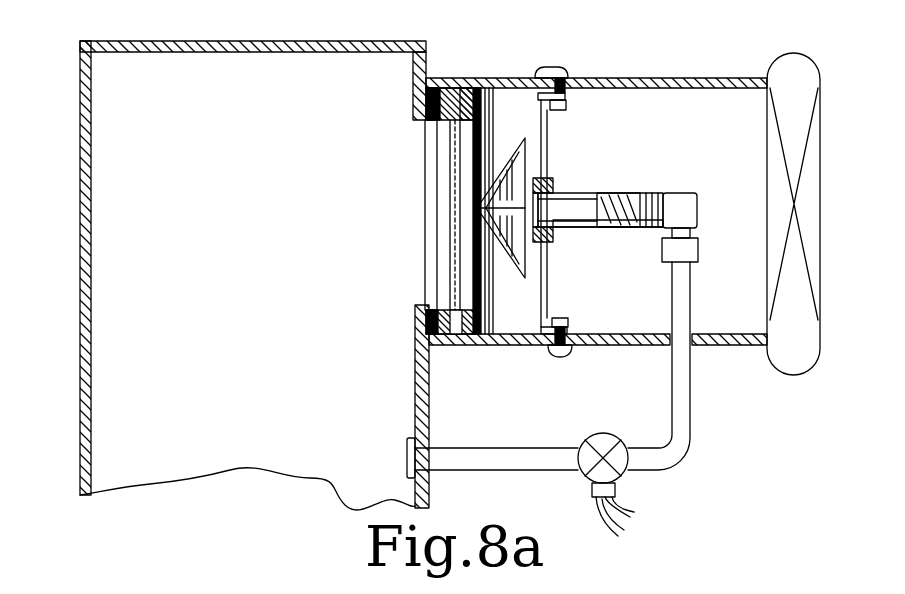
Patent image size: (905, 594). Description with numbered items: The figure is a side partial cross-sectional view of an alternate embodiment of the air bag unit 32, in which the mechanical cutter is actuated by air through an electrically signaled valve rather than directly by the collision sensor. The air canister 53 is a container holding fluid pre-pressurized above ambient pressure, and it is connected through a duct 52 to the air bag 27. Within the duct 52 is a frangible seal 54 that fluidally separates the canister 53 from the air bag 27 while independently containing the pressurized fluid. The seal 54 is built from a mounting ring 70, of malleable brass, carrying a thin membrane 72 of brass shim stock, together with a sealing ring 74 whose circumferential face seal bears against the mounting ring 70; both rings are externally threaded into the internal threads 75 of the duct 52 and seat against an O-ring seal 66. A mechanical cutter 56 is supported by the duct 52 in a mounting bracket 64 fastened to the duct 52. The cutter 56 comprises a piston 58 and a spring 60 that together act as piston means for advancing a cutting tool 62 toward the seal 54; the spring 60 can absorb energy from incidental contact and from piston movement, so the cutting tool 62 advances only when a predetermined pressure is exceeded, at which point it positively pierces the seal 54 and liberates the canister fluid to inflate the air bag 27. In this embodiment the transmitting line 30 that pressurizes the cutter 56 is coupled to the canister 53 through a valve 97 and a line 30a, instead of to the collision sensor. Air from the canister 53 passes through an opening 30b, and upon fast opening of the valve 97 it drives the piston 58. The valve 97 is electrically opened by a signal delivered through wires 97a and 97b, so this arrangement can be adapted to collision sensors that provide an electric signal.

The air bag 27 is at (816, 64).
The transmitting line 30 is at (672, 398).
The line 30a is at (493, 447).
The opening 30b is at (400, 457).
The air bag unit 32 is at (74, 211).
The duct 52 is at (650, 76).
The air canister 53 is at (80, 50).
The seal 54 is at (437, 212).
The mechanical cutter 56 is at (600, 194).
The piston 58 is at (657, 194).
The spring 60 is at (632, 230).
The cutting tool 62 is at (512, 258).
The mounting bracket 64 is at (548, 128).
The O-ring seal 66 is at (424, 121).
The mounting ring 70 is at (440, 312).
The membrane 72 is at (455, 165).
The sealing ring 74 is at (467, 308).
The internal threads 75 is at (492, 106).
The valve 97 is at (598, 436).
The wire 97a is at (632, 503).
The wire 97b is at (632, 530).